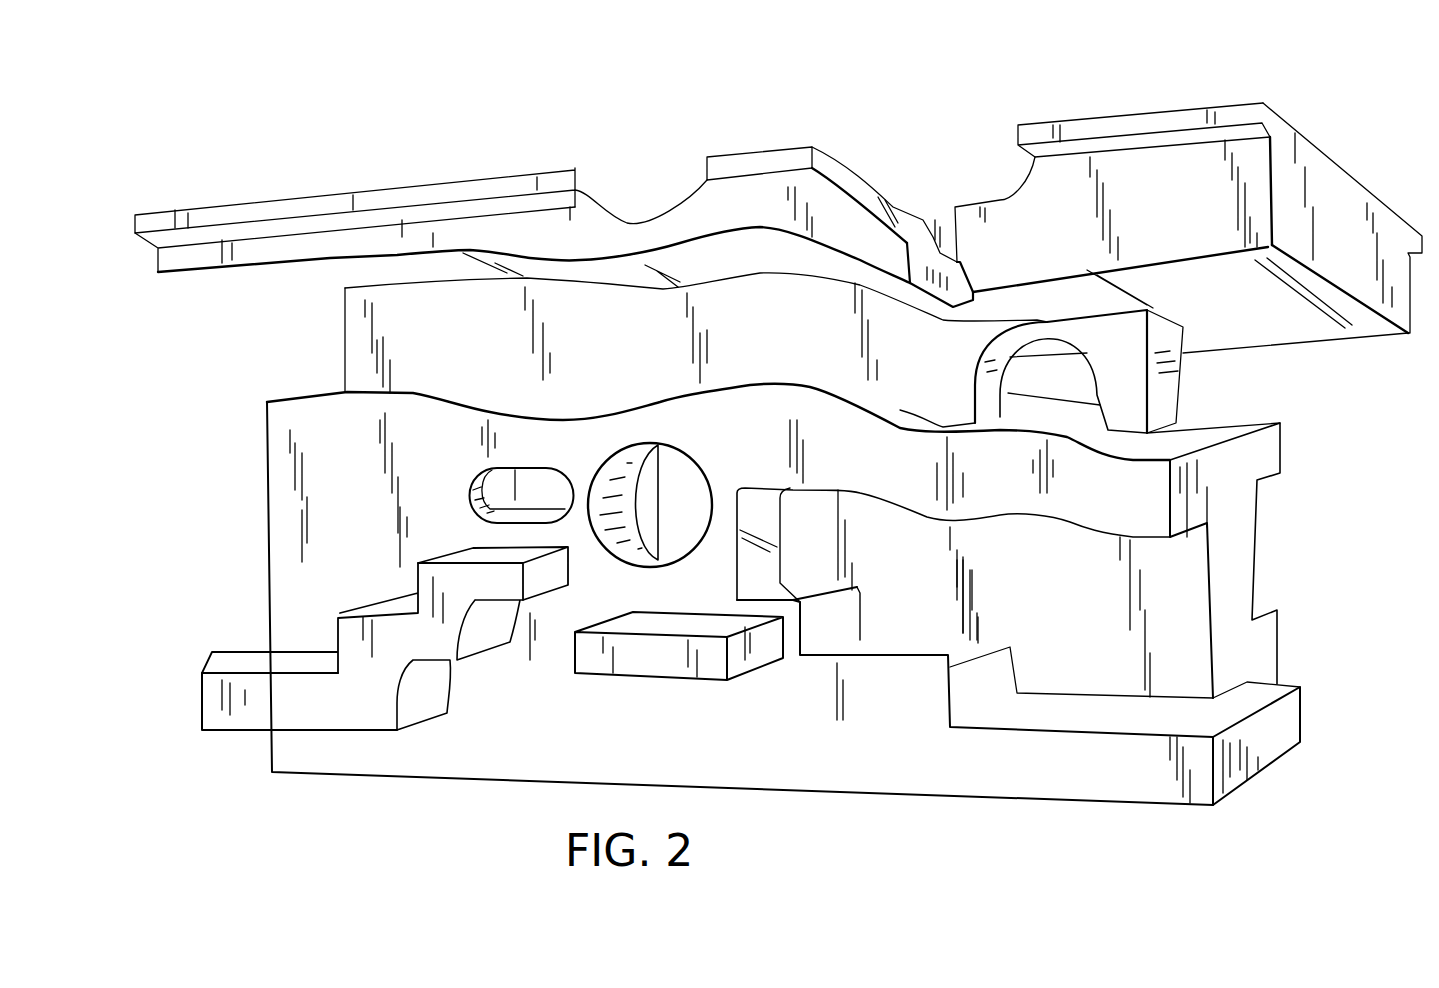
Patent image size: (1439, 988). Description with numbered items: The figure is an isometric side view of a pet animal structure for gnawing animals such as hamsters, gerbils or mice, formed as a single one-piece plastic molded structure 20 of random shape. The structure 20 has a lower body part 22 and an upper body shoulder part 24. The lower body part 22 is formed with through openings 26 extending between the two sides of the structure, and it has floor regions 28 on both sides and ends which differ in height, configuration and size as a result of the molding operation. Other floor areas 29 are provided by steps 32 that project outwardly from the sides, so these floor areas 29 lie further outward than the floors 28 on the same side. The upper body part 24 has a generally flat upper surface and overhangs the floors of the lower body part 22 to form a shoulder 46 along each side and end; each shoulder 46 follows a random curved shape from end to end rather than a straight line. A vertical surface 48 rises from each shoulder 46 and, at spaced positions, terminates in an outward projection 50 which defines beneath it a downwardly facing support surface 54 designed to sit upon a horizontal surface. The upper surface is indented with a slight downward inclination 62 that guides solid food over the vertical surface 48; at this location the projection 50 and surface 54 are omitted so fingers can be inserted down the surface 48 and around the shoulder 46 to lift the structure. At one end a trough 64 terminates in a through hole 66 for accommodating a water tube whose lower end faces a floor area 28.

The plastic molded structure 20 is at (232, 492).
The lower body part 22 is at (258, 437).
The upper body shoulder part 24 is at (332, 185).
The through openings 26 is at (702, 514).
The floor regions 28 is at (320, 392).
The floor areas 29 is at (262, 665).
The steps 32 is at (267, 717).
The shoulder 46 is at (248, 270).
The vertical surface 48 is at (435, 232).
The outward projection 50 is at (500, 185).
The downwardly facing support surface 54 is at (182, 250).
The downward inclination 62 is at (615, 195).
The trough 64 is at (950, 227).
The through hole 66 is at (923, 220).